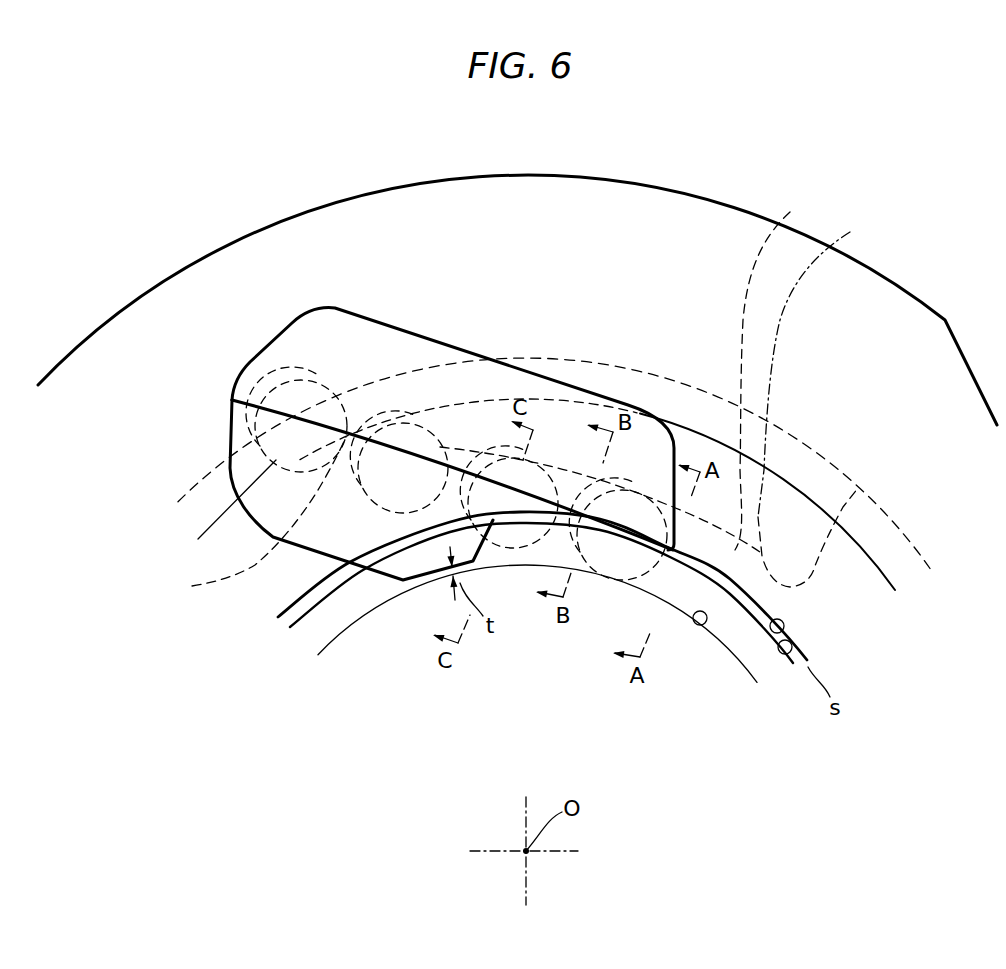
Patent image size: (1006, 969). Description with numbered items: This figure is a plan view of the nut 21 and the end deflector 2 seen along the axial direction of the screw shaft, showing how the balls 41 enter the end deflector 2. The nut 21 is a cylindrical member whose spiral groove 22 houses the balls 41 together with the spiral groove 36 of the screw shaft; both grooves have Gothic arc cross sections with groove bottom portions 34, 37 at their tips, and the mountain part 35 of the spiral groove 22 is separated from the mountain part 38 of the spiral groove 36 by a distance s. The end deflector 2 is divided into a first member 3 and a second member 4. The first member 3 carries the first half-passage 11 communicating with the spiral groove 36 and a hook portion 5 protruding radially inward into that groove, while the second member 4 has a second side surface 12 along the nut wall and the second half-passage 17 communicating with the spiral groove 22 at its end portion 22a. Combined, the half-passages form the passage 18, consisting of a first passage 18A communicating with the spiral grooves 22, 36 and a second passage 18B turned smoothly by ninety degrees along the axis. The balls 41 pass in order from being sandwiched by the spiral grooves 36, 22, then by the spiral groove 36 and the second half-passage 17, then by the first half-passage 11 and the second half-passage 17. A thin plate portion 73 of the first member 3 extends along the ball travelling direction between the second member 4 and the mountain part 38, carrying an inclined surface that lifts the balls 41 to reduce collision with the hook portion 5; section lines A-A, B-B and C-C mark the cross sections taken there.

The end deflector 2 is at (441, 322).
The first member 3 is at (228, 443).
The second member 4 is at (467, 352).
The hook portion 5 is at (408, 580).
The first half-passage 11 is at (253, 517).
The second side surface 12 is at (608, 465).
The second half-passage 17 is at (473, 362).
The passage 18 is at (240, 155).
The first passage 18A is at (363, 420).
The second passage 18B is at (320, 378).
The nut 21 is at (426, 178).
The spiral groove 22 is at (812, 630).
The end portion of the spiral groove 22a is at (785, 367).
The groove bottom portion 34 is at (878, 507).
The mountain part 35 is at (784, 633).
The spiral groove 36 is at (790, 665).
The groove bottom portion 37 is at (700, 626).
The mountain part 38 is at (791, 637).
The ball 41 is at (820, 357).
The thin plate portion 73 is at (636, 548).